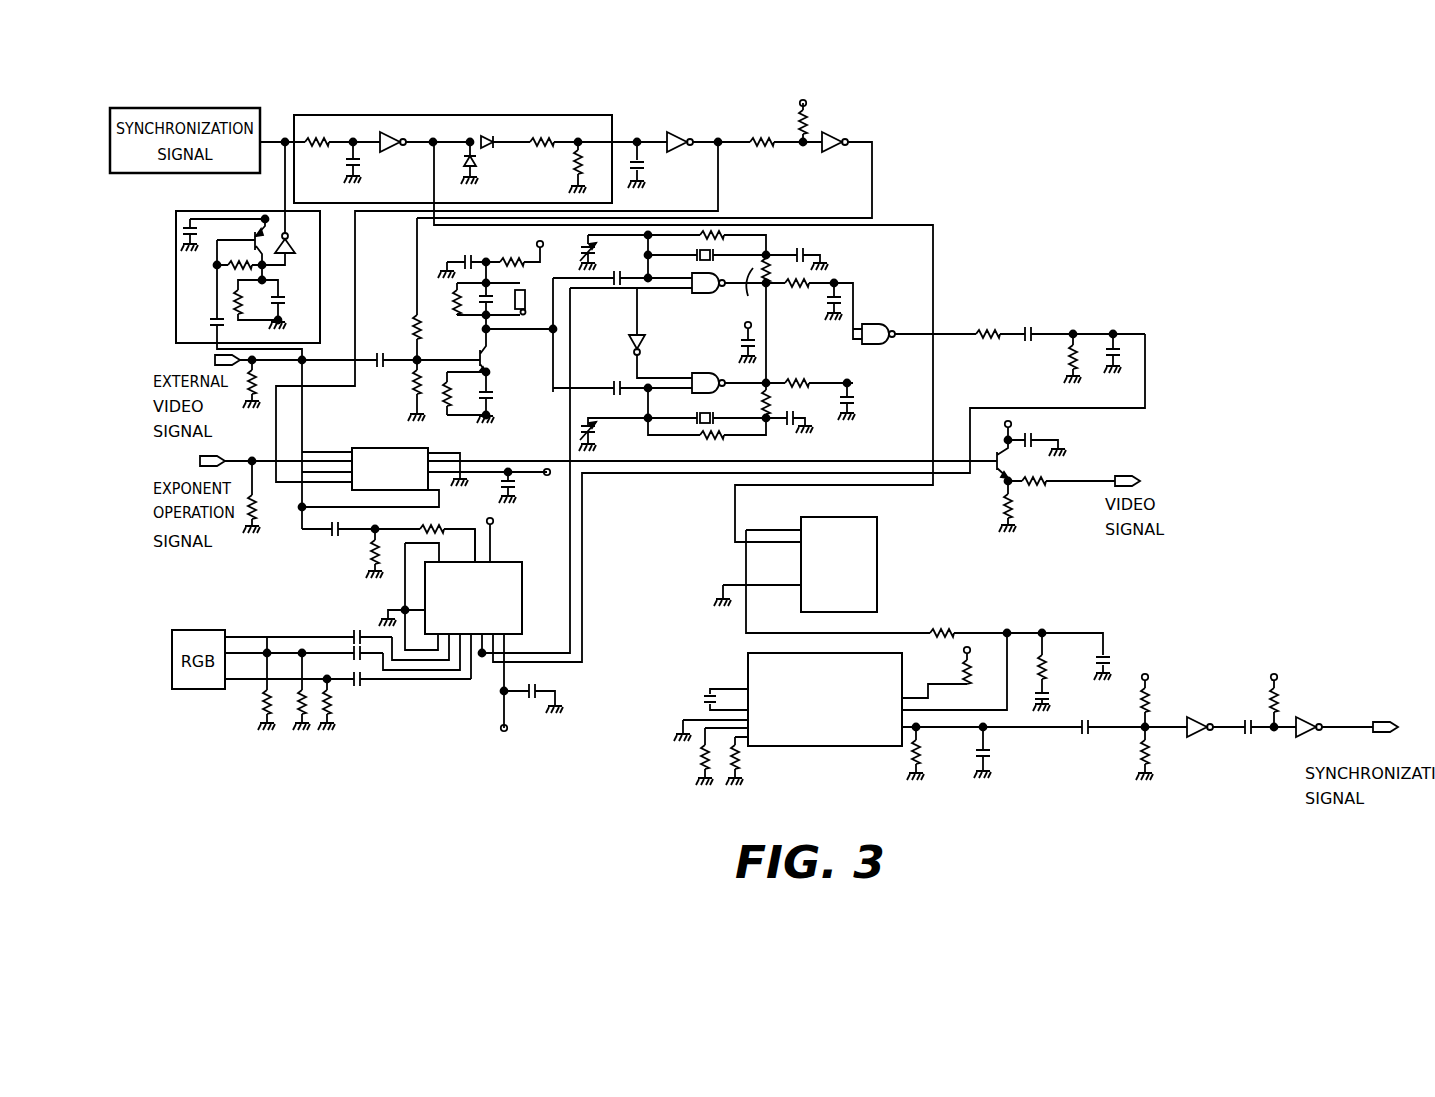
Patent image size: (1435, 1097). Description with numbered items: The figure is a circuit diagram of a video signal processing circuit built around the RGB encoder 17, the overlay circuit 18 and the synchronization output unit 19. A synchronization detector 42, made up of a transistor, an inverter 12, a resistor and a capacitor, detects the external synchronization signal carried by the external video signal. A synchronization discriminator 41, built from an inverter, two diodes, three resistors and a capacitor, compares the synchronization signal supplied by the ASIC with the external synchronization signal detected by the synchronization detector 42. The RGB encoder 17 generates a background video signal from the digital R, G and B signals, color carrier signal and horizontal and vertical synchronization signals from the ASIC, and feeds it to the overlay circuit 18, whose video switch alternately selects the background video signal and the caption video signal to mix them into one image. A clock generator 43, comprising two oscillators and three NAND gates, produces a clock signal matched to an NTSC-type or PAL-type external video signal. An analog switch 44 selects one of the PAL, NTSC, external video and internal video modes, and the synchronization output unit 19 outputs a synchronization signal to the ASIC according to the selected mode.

The synchronization discriminator 41 is at (388, 115).
The synchronization detector 42 is at (228, 285).
The inverter 12 is at (296, 243).
The clock generator 43 is at (883, 278).
The overlay circuit 18 is at (388, 448).
The RGB encoder 17 is at (503, 562).
The analog switch 44 is at (878, 568).
The synchronization output unit 19 is at (843, 746).